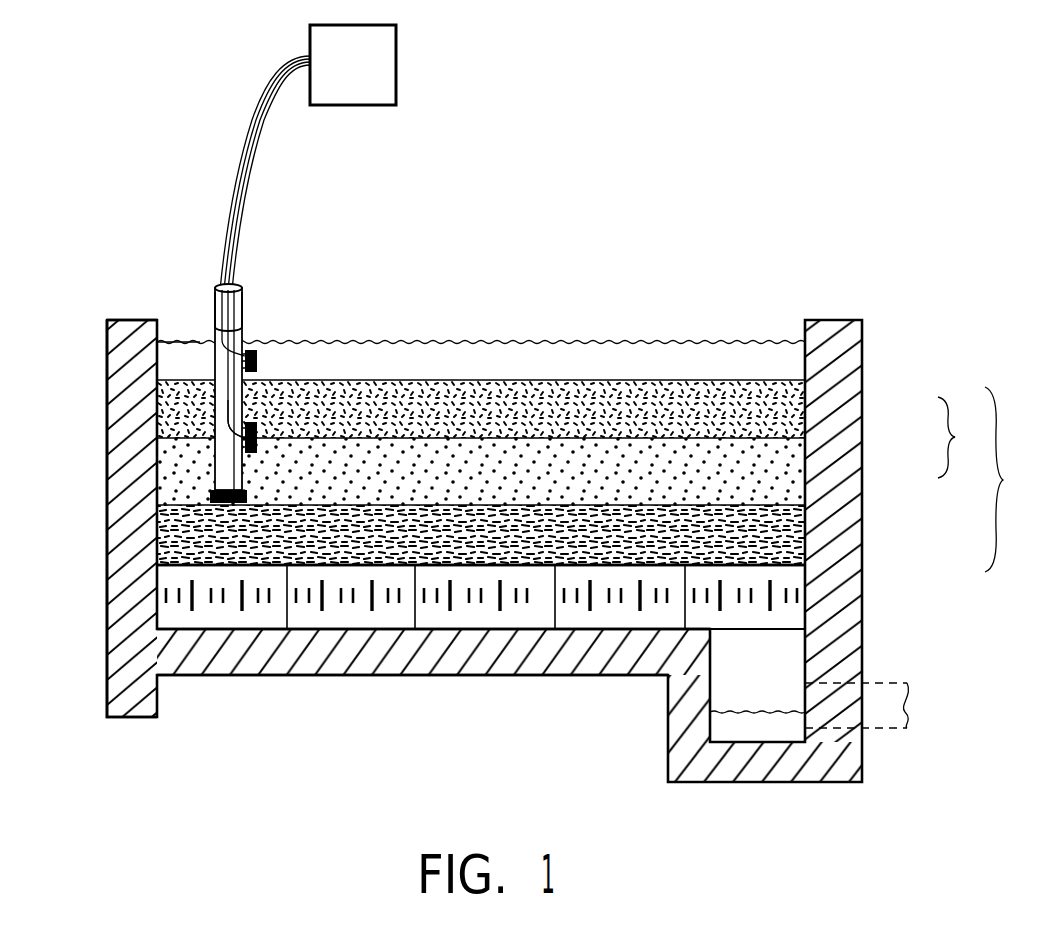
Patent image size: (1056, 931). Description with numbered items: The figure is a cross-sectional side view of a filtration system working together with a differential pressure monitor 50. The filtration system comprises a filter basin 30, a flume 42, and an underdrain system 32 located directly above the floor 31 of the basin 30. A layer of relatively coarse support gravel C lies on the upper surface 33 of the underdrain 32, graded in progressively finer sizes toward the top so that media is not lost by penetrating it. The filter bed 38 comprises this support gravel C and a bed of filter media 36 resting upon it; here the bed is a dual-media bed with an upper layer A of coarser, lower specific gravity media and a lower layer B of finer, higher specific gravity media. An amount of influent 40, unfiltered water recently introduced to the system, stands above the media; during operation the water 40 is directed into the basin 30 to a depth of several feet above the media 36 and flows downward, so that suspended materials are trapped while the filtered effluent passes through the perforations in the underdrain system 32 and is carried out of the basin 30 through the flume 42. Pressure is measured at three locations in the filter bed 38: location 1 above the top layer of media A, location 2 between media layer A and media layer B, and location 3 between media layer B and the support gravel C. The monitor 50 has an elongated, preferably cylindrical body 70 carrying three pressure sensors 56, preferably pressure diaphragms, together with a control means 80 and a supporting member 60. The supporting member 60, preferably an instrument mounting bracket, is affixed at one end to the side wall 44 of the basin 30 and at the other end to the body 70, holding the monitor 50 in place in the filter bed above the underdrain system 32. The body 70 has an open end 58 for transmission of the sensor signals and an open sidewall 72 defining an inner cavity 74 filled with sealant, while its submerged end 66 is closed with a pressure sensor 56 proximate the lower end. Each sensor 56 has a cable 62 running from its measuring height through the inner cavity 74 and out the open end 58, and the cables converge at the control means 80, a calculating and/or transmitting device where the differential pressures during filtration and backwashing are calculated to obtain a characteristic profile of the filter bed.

The filter basin 30 is at (345, 660).
The floor 31 is at (190, 628).
The underdrain system 32 is at (483, 613).
The upper surface 33 is at (210, 565).
The filter media 36 is at (962, 437).
The filter bed 38 is at (1014, 479).
The influent 40 is at (698, 352).
The flume 42 is at (877, 688).
The side wall 44 is at (130, 388).
The differential pressure monitor 50 is at (209, 297).
The pressure sensor 56 is at (210, 495).
The open end 58 is at (240, 283).
The supporting member 60 is at (185, 323).
The cable 62 is at (246, 232).
The submerged end 66 is at (216, 466).
The elongated body 70 is at (243, 305).
The open sidewall 72 is at (244, 338).
The inner cavity 74 is at (222, 287).
The control means 80 is at (397, 65).
The upper layer of filter media A is at (777, 403).
The lower layer of filter media B is at (770, 473).
The layer of support gravel C is at (788, 537).
The location above top layer of media 1 is at (257, 362).
The location between media layers 2 is at (260, 424).
The location between lower media layer and support gravel 3 is at (248, 498).